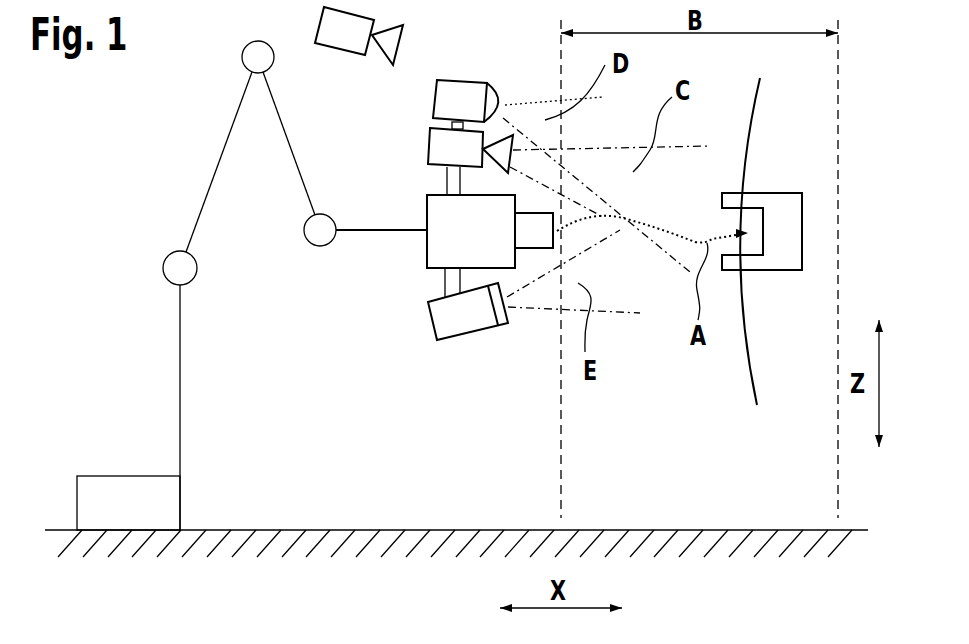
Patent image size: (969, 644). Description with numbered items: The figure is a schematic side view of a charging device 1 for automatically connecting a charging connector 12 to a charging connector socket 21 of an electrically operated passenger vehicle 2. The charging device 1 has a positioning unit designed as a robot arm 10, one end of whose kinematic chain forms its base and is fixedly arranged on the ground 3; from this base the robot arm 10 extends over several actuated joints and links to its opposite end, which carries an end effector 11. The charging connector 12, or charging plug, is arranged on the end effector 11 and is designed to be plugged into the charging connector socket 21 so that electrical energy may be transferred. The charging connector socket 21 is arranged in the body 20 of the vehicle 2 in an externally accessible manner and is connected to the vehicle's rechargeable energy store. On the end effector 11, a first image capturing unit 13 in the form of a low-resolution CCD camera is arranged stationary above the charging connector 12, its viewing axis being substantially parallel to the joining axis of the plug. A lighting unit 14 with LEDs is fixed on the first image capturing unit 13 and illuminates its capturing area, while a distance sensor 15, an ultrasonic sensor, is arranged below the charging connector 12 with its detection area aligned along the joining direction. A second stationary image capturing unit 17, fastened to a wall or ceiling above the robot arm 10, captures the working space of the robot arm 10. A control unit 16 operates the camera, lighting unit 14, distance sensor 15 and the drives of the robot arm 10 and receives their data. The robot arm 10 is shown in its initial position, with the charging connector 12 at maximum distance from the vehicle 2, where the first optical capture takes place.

The charging device 1 is at (132, 112).
The vehicle 2 is at (836, 180).
The ground 3 is at (267, 530).
The robot arm 10 is at (213, 181).
The end effector 11 is at (362, 233).
The charging connector 12 is at (533, 230).
The first image capturing unit 13 is at (443, 152).
The lighting unit 14 is at (447, 100).
The distance sensor 15 is at (463, 318).
The control unit 16 is at (128, 493).
The second stationary image capturing unit 17 is at (343, 33).
The body 20 is at (750, 118).
The charging connector socket 21 is at (793, 233).